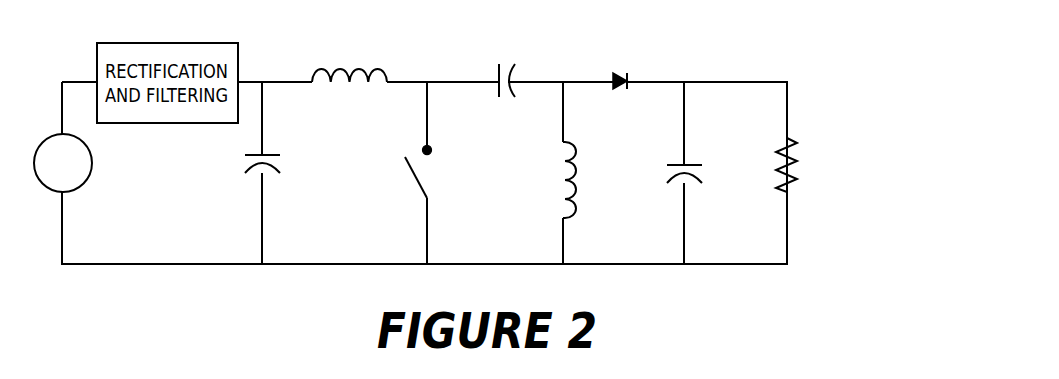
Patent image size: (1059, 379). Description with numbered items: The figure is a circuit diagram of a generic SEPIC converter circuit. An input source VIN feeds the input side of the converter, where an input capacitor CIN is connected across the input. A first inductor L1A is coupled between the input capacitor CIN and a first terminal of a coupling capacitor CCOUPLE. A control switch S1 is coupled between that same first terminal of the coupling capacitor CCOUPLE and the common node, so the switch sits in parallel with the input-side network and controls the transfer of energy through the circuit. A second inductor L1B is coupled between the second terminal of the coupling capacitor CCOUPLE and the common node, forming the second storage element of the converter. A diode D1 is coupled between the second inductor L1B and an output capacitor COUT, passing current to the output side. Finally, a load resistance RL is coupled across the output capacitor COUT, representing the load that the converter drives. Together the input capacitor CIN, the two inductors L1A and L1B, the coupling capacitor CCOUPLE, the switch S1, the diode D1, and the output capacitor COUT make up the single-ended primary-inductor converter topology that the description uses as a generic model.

The input voltage source VIN is at (63, 163).
The input capacitor CIN is at (276, 166).
The first inductor L1A is at (349, 62).
The control switch S1 is at (430, 172).
The coupling capacitor CCOUPLE is at (505, 66).
The second inductor L1B is at (588, 180).
The diode D1 is at (620, 70).
The output capacitor COUT is at (704, 176).
The load resistance RL is at (801, 165).